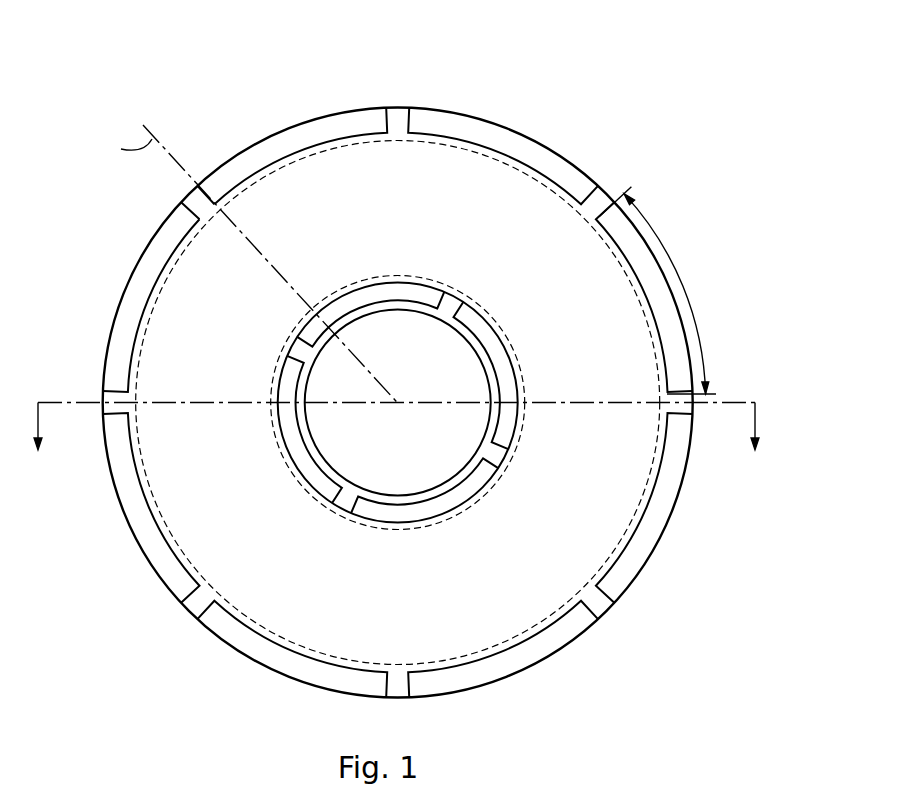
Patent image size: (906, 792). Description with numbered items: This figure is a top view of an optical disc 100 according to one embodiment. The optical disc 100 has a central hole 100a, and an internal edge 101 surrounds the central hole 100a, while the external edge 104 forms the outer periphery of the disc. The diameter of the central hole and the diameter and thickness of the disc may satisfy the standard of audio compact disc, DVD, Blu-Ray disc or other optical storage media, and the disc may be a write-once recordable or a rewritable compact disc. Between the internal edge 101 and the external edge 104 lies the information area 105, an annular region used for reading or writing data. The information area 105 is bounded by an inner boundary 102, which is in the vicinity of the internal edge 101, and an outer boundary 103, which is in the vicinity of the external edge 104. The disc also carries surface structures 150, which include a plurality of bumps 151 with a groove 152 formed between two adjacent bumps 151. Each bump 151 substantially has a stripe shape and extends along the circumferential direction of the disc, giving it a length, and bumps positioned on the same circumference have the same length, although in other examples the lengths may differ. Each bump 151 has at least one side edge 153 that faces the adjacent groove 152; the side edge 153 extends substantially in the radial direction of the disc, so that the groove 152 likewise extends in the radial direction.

The optical disc 100 is at (732, 48).
The central hole 100a is at (403, 393).
The internal edge 101 is at (498, 458).
The inner boundary 102 is at (525, 428).
The outer boundary 103 is at (620, 547).
The external edge 104 is at (680, 490).
The information area 105 is at (596, 388).
The surface structures 150 is at (295, 58).
The bump 151 is at (318, 133).
The groove 152 is at (398, 125).
The side edge 153 is at (209, 190).